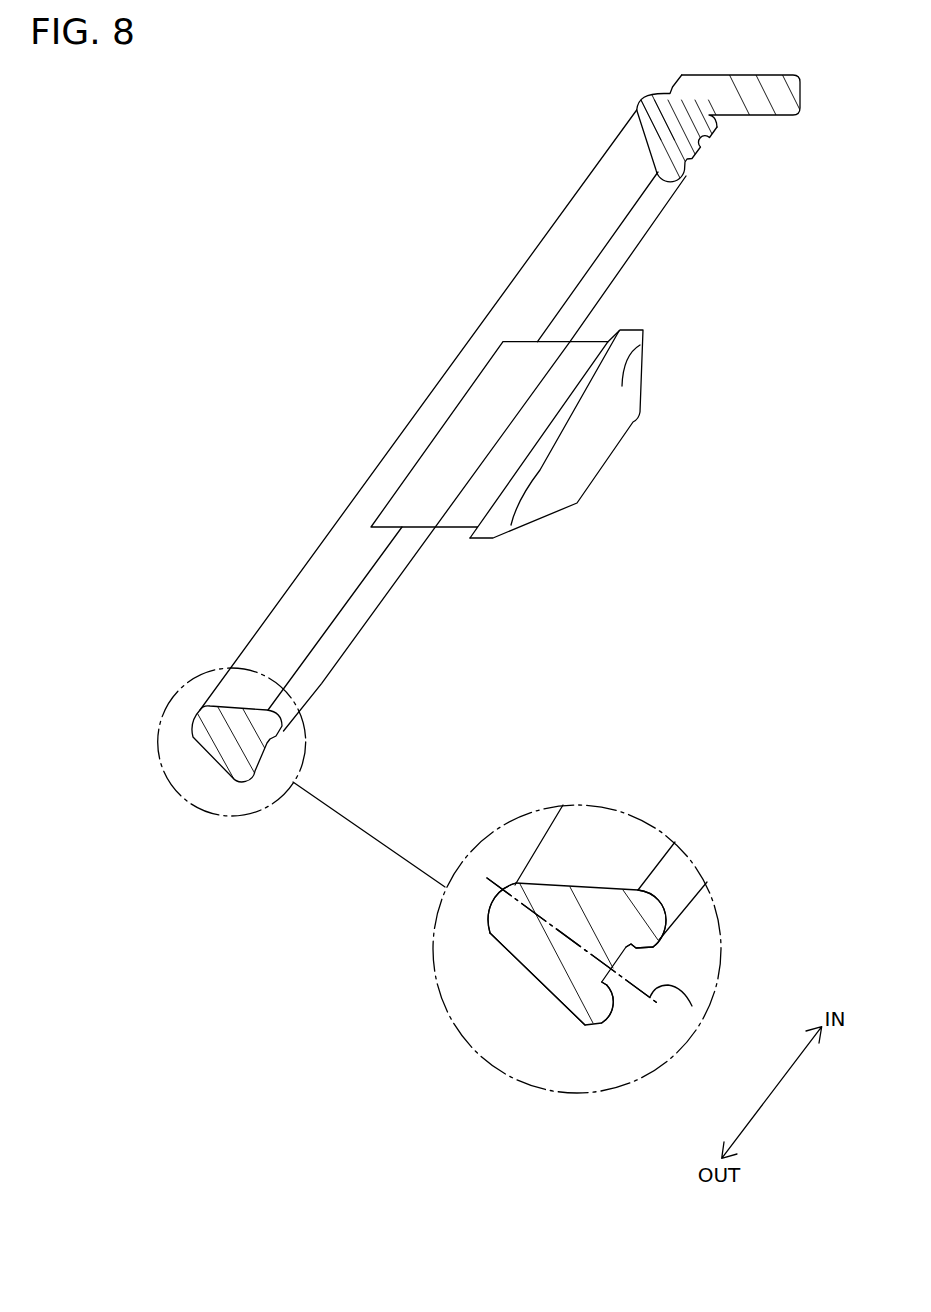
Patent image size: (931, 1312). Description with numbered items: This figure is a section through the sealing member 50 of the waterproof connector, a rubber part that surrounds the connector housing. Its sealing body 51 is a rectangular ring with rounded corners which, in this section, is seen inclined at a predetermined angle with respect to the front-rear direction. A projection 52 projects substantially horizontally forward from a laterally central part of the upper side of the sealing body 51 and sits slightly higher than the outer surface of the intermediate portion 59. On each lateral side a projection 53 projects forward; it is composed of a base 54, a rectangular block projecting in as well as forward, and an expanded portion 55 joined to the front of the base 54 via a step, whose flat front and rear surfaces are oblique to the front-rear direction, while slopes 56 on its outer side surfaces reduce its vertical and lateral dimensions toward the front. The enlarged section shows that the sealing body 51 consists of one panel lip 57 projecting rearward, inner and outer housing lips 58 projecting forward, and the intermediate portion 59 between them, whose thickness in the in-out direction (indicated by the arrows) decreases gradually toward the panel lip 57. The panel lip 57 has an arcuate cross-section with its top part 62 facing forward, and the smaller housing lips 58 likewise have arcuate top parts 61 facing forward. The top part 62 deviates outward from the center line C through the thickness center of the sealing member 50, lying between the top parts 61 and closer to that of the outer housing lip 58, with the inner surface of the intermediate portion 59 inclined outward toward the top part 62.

The sealing member 50 is at (430, 397).
The sealing body 51 is at (539, 246).
The projection 52 is at (775, 83).
The projection 53 is at (545, 497).
The base 54 is at (448, 530).
The expanded portion 55 is at (521, 530).
The slope 56 is at (625, 383).
The panel lip 57 is at (511, 887).
The housing lip 58 is at (658, 923).
The intermediate portion 59 is at (532, 967).
The top part 61 is at (627, 950).
The top part 62 is at (491, 900).
The center line C is at (692, 1007).